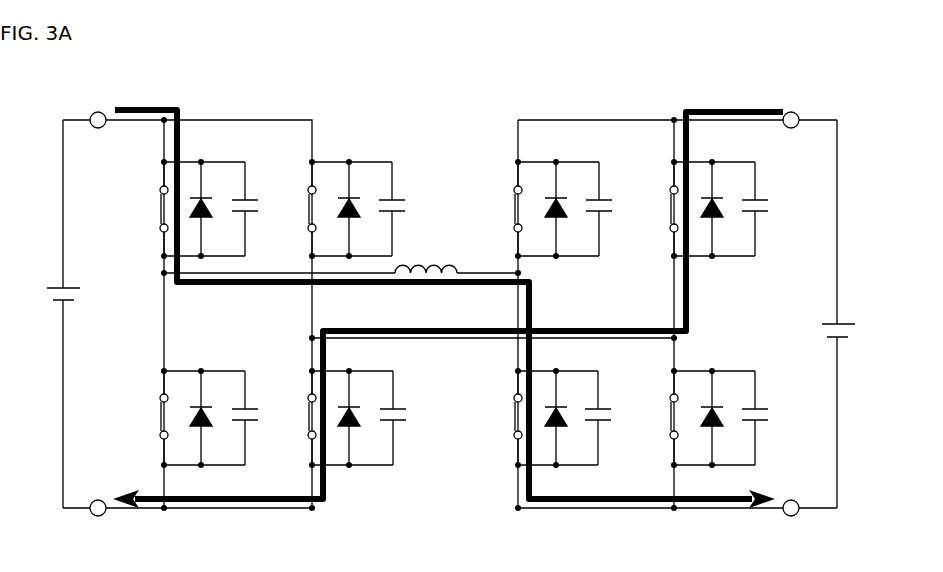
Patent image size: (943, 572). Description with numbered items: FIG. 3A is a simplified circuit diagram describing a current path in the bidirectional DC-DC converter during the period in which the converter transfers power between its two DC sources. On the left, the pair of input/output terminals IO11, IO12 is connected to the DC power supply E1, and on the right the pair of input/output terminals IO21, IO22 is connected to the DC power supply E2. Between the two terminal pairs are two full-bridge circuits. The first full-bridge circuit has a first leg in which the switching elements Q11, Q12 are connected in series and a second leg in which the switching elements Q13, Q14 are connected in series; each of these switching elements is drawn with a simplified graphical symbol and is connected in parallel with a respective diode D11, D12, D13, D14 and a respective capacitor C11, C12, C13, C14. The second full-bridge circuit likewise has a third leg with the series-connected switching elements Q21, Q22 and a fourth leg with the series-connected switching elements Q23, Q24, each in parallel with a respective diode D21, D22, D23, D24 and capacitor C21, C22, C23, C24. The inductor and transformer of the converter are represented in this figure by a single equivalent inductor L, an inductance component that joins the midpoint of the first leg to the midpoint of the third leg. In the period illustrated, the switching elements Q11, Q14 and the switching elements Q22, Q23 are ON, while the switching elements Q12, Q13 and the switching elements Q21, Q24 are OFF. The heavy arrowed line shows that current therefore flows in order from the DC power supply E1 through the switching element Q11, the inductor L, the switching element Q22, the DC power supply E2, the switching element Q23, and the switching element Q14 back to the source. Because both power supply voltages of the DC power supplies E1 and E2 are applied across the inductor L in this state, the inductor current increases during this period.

The input/output terminal IO11 is at (93, 105).
The input/output terminal IO12 is at (93, 525).
The input/output terminal IO21 is at (786, 105).
The input/output terminal IO22 is at (786, 526).
The DC power supply E1 is at (53, 314).
The DC power supply E2 is at (846, 314).
The inductor L is at (426, 256).
The switching element Q11 is at (133, 209).
The switching element Q12 is at (133, 418).
The switching element Q13 is at (286, 209).
The switching element Q14 is at (285, 419).
The switching element Q21 is at (495, 209).
The switching element Q22 is at (493, 418).
The switching element Q23 is at (651, 209).
The switching element Q24 is at (650, 418).
The diode D11 is at (218, 196).
The diode D12 is at (193, 404).
The diode D13 is at (364, 196).
The diode D14 is at (365, 438).
The diode D21 is at (562, 229).
The diode D22 is at (562, 405).
The diode D23 is at (727, 226).
The diode D24 is at (727, 402).
The capacitor C11 is at (260, 209).
The capacitor C12 is at (260, 418).
The capacitor C13 is at (409, 209).
The capacitor C14 is at (408, 418).
The capacitor C21 is at (608, 229).
The capacitor C22 is at (614, 418).
The capacitor C23 is at (781, 209).
The capacitor C24 is at (782, 418).